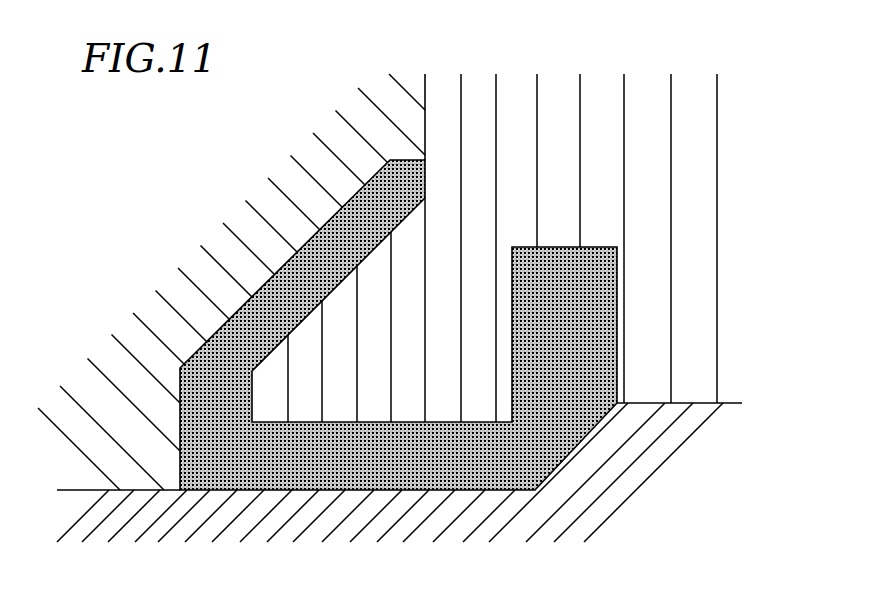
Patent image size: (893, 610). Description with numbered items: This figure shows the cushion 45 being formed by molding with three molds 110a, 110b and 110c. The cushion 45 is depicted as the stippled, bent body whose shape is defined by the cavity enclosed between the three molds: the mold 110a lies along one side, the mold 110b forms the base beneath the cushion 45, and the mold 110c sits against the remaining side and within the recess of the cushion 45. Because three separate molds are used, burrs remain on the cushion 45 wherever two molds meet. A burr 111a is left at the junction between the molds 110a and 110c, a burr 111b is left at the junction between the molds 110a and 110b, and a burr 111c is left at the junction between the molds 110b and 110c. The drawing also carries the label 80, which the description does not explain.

The cushion 45 is at (240, 468).
The housing 80 is at (307, 217).
The mold 110a is at (250, 232).
The mold 110b is at (435, 508).
The mold 110c is at (653, 146).
The burr 111a is at (425, 137).
The burr 111b is at (146, 486).
The burr 111c is at (653, 400).